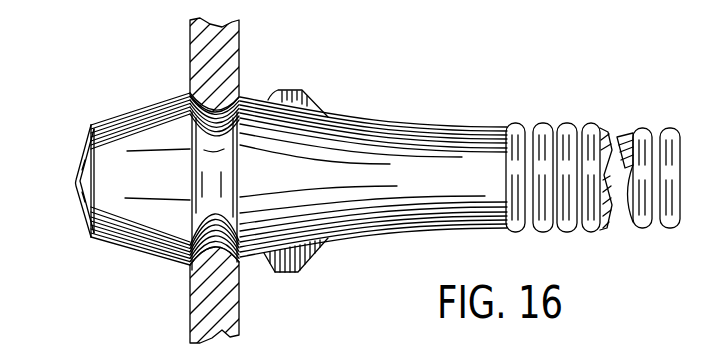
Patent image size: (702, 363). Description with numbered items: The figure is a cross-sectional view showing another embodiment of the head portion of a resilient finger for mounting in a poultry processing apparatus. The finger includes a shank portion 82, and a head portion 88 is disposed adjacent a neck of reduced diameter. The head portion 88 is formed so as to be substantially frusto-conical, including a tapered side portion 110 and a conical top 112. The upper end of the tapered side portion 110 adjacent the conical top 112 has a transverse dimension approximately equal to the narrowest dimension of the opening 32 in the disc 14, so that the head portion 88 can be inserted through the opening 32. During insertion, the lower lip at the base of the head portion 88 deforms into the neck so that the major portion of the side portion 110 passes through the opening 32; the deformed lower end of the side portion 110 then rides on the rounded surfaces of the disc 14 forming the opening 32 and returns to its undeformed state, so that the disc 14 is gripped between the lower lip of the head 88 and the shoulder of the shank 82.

The disc 14 is at (242, 40).
The opening 32 is at (252, 98).
The shank portion 82 is at (453, 130).
The head portion 88 is at (112, 111).
The tapered side portion 110 is at (167, 100).
The conical top 112 is at (74, 178).